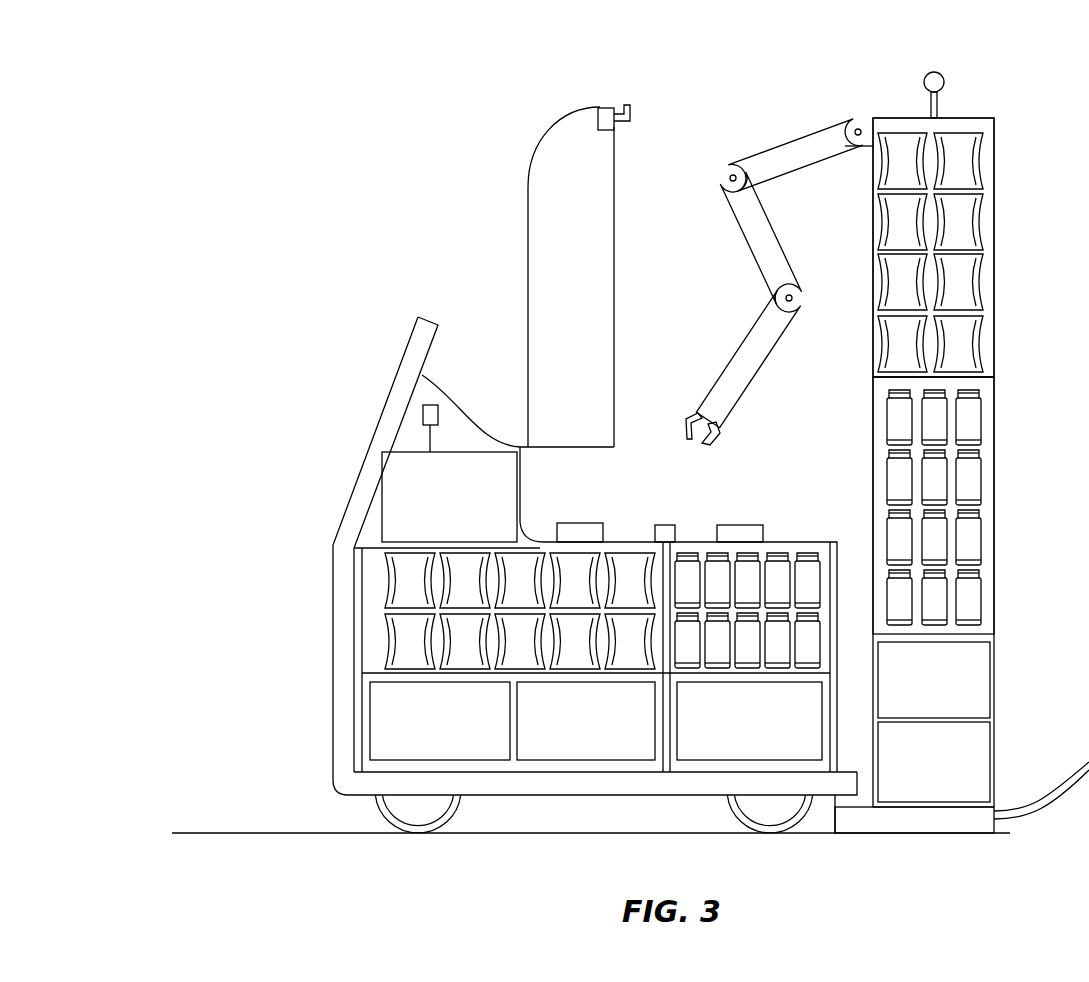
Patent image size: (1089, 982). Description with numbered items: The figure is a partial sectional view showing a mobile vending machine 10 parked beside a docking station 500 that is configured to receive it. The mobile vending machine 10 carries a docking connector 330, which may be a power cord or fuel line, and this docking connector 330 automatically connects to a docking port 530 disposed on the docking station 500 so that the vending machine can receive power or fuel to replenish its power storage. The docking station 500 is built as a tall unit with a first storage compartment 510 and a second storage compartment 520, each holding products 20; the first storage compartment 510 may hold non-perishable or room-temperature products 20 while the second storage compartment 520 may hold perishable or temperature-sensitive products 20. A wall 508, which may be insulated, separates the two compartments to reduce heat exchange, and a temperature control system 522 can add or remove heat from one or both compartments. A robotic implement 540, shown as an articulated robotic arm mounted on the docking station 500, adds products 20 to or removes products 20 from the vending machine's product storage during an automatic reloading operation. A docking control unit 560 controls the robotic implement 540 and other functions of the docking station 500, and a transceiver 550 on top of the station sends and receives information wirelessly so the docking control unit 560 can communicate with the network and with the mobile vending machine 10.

The mobile vending machine 10 is at (436, 255).
The products 20 is at (967, 212).
The docking connector 330 is at (840, 802).
The docking station 500 is at (880, 42).
The wall 508 is at (987, 373).
The first storage compartment 510 is at (988, 283).
The second storage compartment 520 is at (988, 546).
The temperature control system 522 is at (965, 687).
The docking port 530 is at (848, 820).
The robotic implement 540 is at (789, 160).
The transceiver 550 is at (937, 103).
The docking control unit 560 is at (965, 770).